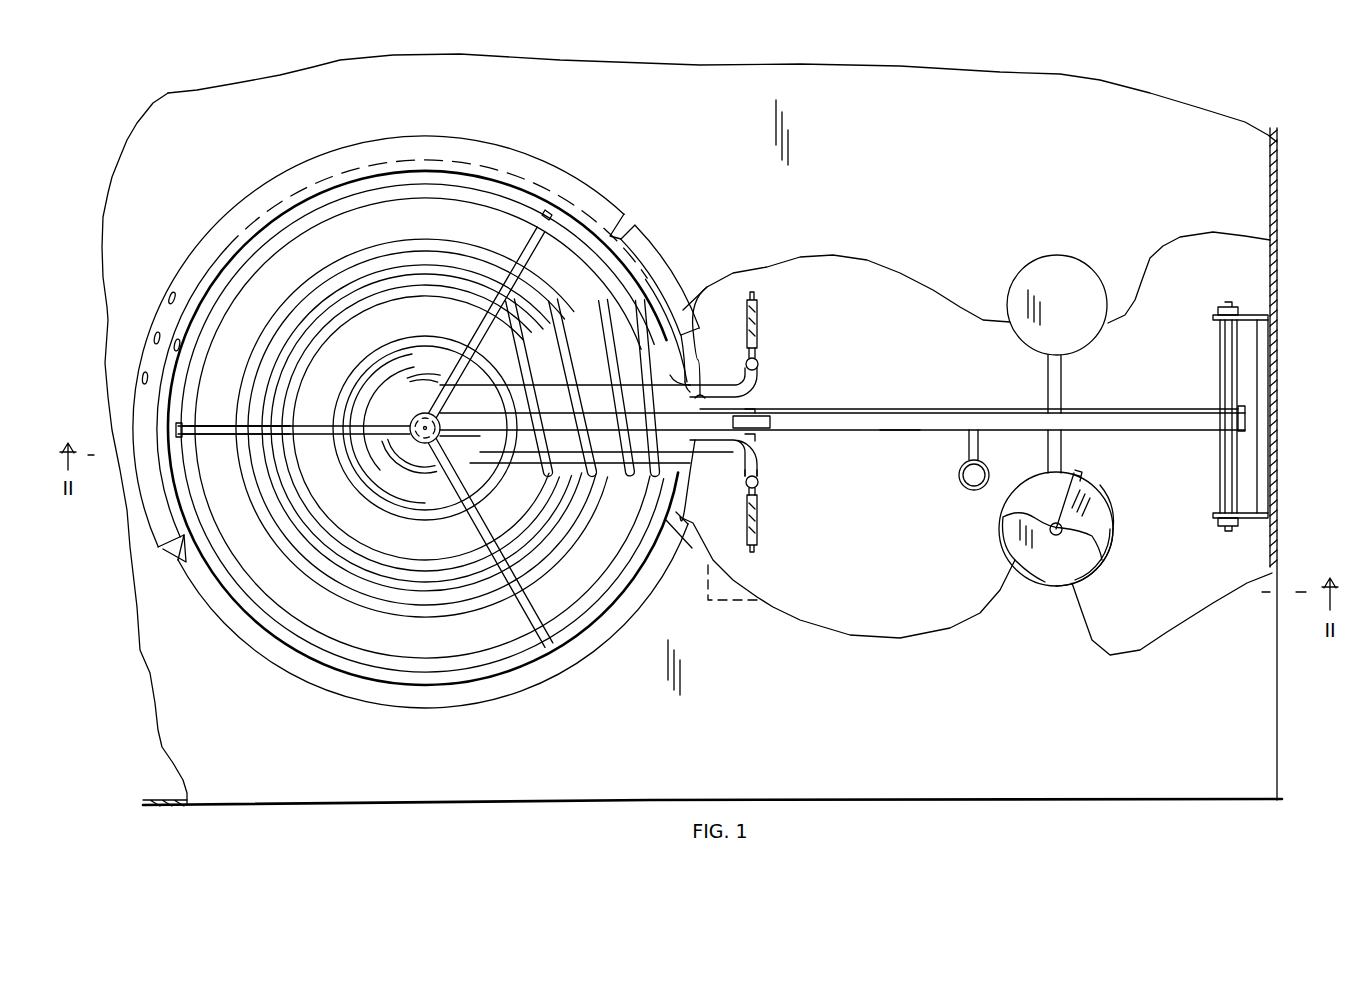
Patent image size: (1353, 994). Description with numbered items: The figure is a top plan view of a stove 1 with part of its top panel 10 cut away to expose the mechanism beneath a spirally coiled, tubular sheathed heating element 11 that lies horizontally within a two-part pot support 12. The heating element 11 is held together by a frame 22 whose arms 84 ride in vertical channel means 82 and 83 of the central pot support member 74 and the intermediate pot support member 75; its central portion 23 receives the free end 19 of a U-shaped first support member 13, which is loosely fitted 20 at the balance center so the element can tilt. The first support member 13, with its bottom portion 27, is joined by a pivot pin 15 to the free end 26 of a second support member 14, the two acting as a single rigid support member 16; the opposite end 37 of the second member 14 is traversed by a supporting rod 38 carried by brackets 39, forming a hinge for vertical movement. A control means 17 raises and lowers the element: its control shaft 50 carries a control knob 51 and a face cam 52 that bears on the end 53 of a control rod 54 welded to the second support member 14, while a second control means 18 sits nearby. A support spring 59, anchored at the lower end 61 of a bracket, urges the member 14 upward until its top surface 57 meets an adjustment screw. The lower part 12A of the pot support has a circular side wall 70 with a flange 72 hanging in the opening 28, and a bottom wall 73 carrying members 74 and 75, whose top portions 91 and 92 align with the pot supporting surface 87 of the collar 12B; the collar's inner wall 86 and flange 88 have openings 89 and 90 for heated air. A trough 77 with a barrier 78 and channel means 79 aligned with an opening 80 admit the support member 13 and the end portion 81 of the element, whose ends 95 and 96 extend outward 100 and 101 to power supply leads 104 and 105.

The stove 1 is at (1096, 66).
The top panel 10 is at (1115, 115).
The heating element 11 is at (372, 254).
The pot support 12 is at (512, 155).
The lower part of the pot support 12A is at (476, 270).
The pot support collar 12B is at (556, 175).
The first horizontally disposed heating element support member 13 is at (474, 428).
The second horizontally disposed support member 14 is at (866, 434).
The pivot pin 15 is at (760, 412).
The single rigid horizontally disposed support member 16 is at (894, 436).
The control means 17 is at (1130, 561).
The control means 18 is at (1086, 238).
The free end of the first support member 19 is at (418, 470).
The loose fit 20 is at (436, 412).
The frame 22 is at (318, 420).
The central portion of the frame 23 is at (445, 424).
The free end of the second support member 26 is at (820, 434).
The bottom portion of the U-shaped support member 27 is at (550, 428).
The opening of the top panel 28 is at (683, 312).
The opposite end of the second support member 37 is at (1155, 431).
The supporting rod 38 is at (1222, 474).
The brackets 39 is at (1256, 522).
The control shaft 50 is at (1064, 526).
The control knob 51 is at (1056, 572).
The face cam 52 is at (1116, 520).
The end of the control rod 53 is at (1070, 478).
The control rod 54 is at (1048, 455).
The top surface of the support member 57 is at (930, 410).
The support spring 59 is at (968, 488).
The lower end of the bracket 61 is at (966, 456).
The circular side wall 70 is at (690, 345).
The outwardly extending flange 72 is at (650, 265).
The bottom wall 73 is at (228, 492).
The central pot support member 74 is at (384, 488).
The intermediate pot support member 75 is at (320, 300).
The trough 77 is at (610, 392).
The barrier 78 is at (698, 388).
The vertical channel means 79 is at (585, 380).
The opening in the side wall 80 is at (695, 398).
The end portion of the heating element 81 is at (612, 430).
The vertical channel means 82 is at (350, 440).
The vertical channel means 83 is at (258, 438).
The arms of the heating element frame 84 is at (220, 424).
The inner vertical wall 86 is at (200, 548).
The pot supporting surface 87 is at (428, 158).
The outwardly and downwardly extending flange 88 is at (392, 138).
The openings 89 is at (190, 321).
The openings 90 is at (168, 296).
The top portion of the central pot support member 91 is at (364, 462).
The top portion of the intermediate pot support member 92 is at (368, 510).
The heating element end 95 is at (696, 364).
The heating element end 96 is at (742, 478).
The horizontally outward extension of the heating element end 100 is at (766, 374).
The horizontally outward extension of the heating element end 101 is at (766, 478).
The power supply lead 104 is at (768, 336).
The power supply lead 105 is at (766, 538).